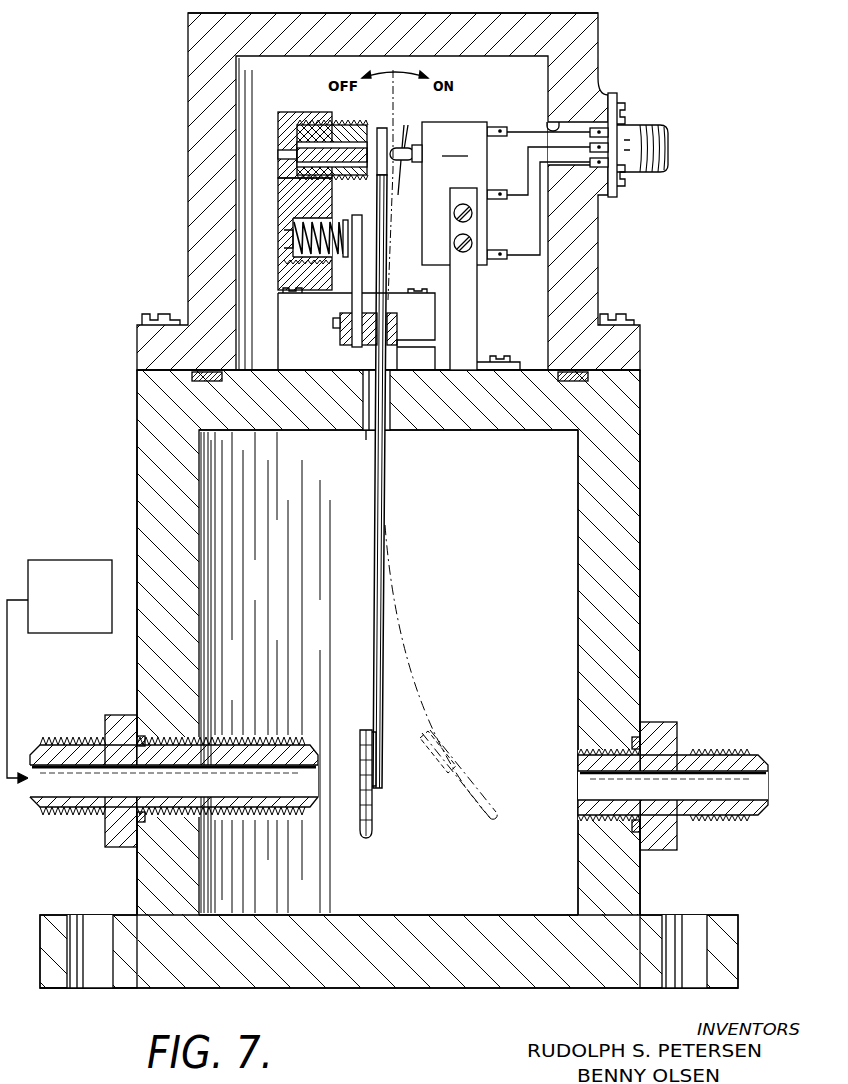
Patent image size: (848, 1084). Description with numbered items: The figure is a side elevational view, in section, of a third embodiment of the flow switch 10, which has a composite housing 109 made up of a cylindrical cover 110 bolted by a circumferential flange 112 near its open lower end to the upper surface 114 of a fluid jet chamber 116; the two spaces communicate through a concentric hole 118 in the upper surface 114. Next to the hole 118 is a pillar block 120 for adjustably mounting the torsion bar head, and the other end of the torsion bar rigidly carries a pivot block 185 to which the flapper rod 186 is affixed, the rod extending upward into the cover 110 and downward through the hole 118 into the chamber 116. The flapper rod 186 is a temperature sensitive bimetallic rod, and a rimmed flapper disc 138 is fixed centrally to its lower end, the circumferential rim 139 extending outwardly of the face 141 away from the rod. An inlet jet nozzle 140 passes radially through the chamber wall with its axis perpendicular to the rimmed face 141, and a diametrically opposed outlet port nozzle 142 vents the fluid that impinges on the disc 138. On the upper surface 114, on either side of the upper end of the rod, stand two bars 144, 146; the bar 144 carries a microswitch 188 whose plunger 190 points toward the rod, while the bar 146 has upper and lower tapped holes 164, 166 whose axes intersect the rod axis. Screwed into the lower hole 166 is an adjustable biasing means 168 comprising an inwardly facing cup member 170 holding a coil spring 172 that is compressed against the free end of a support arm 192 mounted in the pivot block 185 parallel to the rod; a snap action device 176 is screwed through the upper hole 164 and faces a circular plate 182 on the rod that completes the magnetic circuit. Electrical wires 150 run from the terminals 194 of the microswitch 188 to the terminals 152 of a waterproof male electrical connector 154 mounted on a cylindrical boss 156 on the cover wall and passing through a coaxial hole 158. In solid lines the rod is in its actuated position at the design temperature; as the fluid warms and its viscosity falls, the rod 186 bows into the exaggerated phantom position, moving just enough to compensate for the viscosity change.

The flow switch 10 is at (613, 74).
The composite housing 109 is at (644, 419).
The cylindrical cover 110 is at (584, 258).
The circumferential flange 112 is at (632, 352).
The upper surface 114 is at (262, 368).
The fluid jet chamber 116 is at (641, 654).
The concentric hole 118 is at (362, 428).
The pillar block 120 is at (428, 314).
The rimmed flapper disc 138 is at (373, 828).
The circumferential rim 139 is at (95, 560).
The inlet jet nozzle 140 is at (246, 752).
The rimmed face 141 is at (364, 795).
The outlet port nozzle 142 is at (665, 832).
The upstanding bar 144 is at (477, 292).
The upstanding bar 146 is at (300, 125).
The electrical wires 150 is at (520, 250).
The terminals 152 is at (610, 130).
The waterproof male electrical connector 154 is at (669, 148).
The cylindrical boss 156 is at (600, 190).
The coaxial hole 158 is at (552, 124).
The upper tapped hole 164 is at (297, 133).
The lower tapped hole 166 is at (293, 268).
The adjustable biasing means 168 is at (293, 221).
The cup member 170 is at (288, 244).
The coil spring 172 is at (345, 220).
The snap action device 176 is at (297, 159).
The circular plate 182 is at (378, 132).
The pivot block 185 is at (394, 340).
The flapper rod 186 is at (384, 524).
The microswitch 188 is at (454, 193).
The plunger 190 is at (406, 145).
The support arm 192 is at (360, 288).
The terminals 194 is at (497, 126).